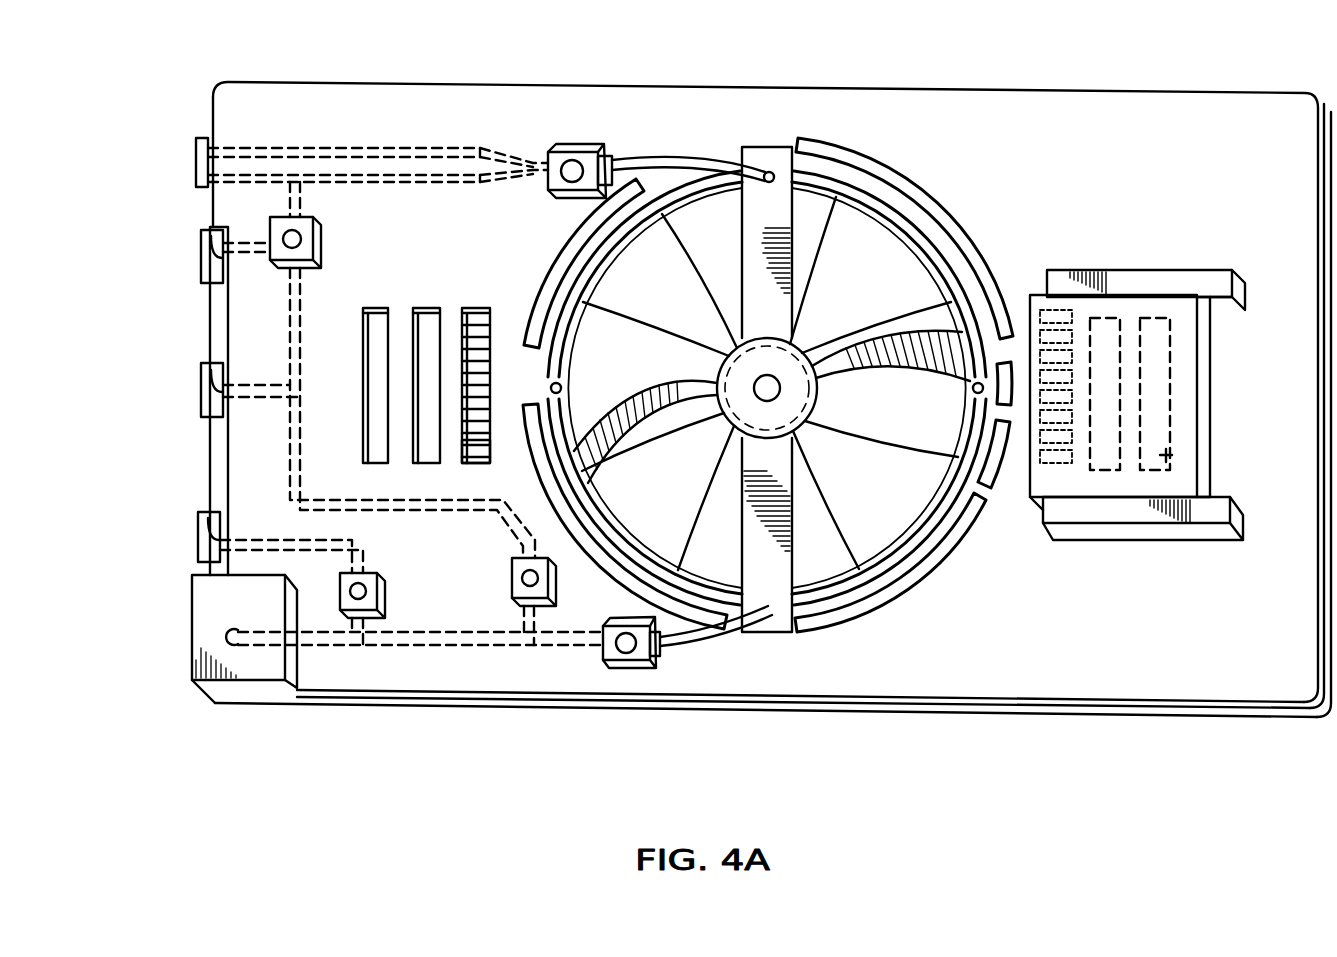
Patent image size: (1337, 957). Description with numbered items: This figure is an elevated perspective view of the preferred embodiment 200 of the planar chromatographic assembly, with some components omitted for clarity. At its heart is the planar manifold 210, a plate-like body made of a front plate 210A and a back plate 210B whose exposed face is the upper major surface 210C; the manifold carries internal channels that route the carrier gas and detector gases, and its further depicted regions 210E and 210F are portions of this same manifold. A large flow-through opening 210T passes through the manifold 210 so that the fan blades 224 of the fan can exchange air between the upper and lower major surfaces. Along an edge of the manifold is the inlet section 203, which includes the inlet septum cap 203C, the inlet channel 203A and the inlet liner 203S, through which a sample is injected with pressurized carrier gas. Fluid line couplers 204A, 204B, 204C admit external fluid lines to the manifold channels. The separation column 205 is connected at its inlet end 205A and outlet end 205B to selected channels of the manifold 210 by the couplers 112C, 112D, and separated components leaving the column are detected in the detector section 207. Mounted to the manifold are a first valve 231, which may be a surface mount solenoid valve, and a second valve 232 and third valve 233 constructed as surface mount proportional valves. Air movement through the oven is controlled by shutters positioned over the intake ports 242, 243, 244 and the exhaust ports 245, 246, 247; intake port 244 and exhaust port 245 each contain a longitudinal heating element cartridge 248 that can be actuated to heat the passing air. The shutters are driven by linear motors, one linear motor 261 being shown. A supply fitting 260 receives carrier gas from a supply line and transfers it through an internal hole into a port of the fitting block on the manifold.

The preferred embodiment of the planar chromatographic assembly 200 is at (832, 54).
The planar manifold 210 is at (1110, 90).
The front plate 210A is at (845, 702).
The back plate 210B is at (965, 714).
The upper major surface 210C is at (386, 118).
The housing conduit channel 210E is at (378, 514).
The housing side channel 210F is at (210, 322).
The flow-through opening 210T is at (915, 190).
The inlet section 203 is at (266, 108).
The inlet channel 203A is at (400, 150).
The inlet septum cap 203C is at (198, 140).
The inlet liner 203S is at (390, 182).
The fluid line coupler 204A is at (200, 255).
The fluid line coupler 204B is at (200, 400).
The fluid line coupler 204C is at (198, 545).
The separation column 205 is at (945, 252).
The inlet end 205A is at (648, 165).
The outlet end 205B is at (693, 637).
The detector section 207 is at (258, 620).
The coupler 112C is at (572, 150).
The coupler 112D is at (622, 672).
The fan blades 224 is at (893, 582).
The first valve 231 is at (322, 245).
The second valve 232 is at (386, 597).
The third valve 233 is at (557, 582).
The intake port 242 is at (377, 307).
The intake port 243 is at (428, 307).
The intake port 244 is at (472, 307).
The exhaust port 245 is at (1047, 480).
The exhaust port 246 is at (1103, 462).
The exhaust port 247 is at (1172, 455).
The longitudinal heating element cartridge 248 is at (470, 464).
The supply fitting 260 is at (1212, 370).
The linear motor 261 is at (1160, 270).